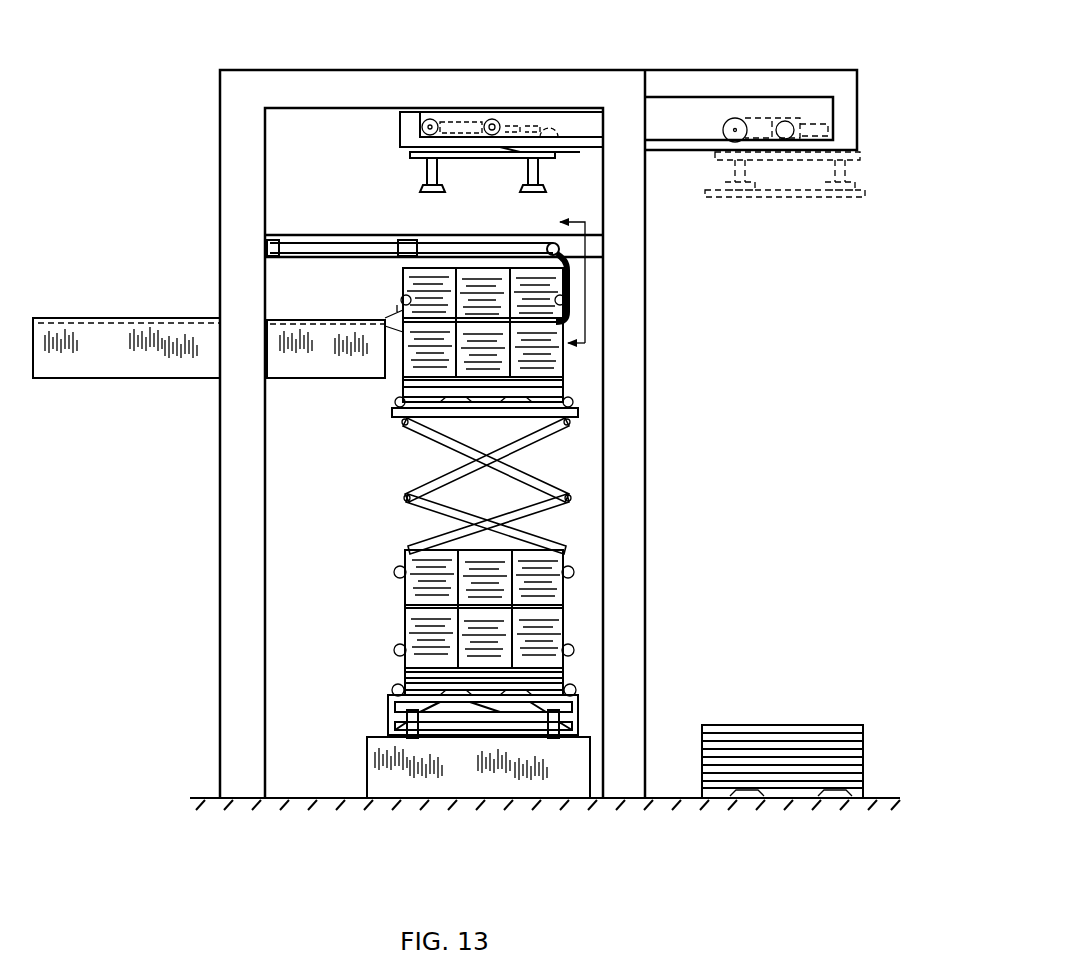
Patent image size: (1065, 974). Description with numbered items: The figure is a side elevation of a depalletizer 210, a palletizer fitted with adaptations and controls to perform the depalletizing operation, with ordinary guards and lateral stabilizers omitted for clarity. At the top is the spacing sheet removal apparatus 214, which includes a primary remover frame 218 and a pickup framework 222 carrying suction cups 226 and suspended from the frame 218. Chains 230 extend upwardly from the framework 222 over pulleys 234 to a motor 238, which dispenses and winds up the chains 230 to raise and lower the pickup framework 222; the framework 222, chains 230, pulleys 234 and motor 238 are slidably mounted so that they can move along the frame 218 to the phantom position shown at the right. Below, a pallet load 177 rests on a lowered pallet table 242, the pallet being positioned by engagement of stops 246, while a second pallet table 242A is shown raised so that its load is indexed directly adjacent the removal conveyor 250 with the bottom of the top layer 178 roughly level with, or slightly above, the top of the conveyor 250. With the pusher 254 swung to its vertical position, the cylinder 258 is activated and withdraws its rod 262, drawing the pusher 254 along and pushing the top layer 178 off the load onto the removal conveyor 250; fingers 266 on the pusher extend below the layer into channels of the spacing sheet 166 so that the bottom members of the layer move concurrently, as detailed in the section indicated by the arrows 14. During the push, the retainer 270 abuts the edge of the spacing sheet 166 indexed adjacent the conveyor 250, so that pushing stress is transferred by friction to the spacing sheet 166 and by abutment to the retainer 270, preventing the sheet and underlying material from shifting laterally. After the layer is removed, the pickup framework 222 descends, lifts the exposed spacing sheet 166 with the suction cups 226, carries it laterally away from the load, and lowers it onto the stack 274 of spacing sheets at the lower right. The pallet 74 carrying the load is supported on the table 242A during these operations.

The palletizer 210 is at (398, 48).
The chains 230 is at (510, 122).
The pulleys 234 is at (400, 128).
The spacing sheet removal apparatus 214 is at (398, 135).
The pickup framework 222 is at (420, 172).
The motor 238 is at (515, 152).
The primary remover frame 218 is at (575, 150).
The suction cups 226 is at (525, 193).
The cylinder 258 is at (328, 243).
The top layer 178 is at (396, 248).
The rod 262 is at (476, 243).
The section line 14 is at (558, 293).
The pusher 254 is at (575, 270).
The fingers 266 is at (566, 327).
The spacing sheet 166 is at (406, 300).
The removal conveyor 250 is at (314, 321).
The retainer 270 is at (400, 321).
The pallet 74 is at (398, 386).
The stops 246 is at (392, 410).
The raised pallet table 242A is at (392, 420).
The pallet load 177 is at (575, 620).
The pallet table 242 is at (580, 716).
The stack of spacing sheets 274 is at (866, 735).